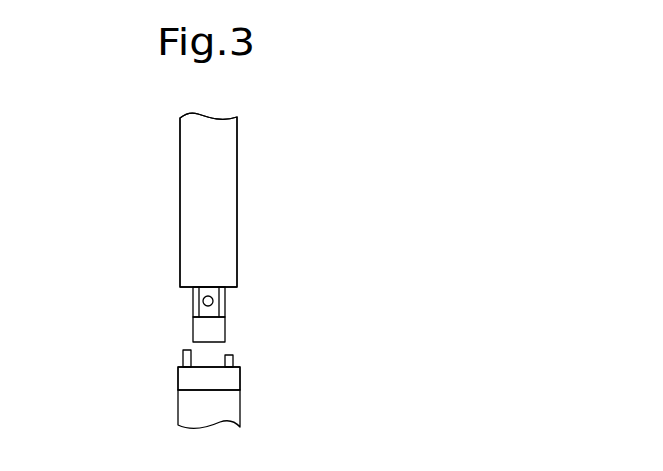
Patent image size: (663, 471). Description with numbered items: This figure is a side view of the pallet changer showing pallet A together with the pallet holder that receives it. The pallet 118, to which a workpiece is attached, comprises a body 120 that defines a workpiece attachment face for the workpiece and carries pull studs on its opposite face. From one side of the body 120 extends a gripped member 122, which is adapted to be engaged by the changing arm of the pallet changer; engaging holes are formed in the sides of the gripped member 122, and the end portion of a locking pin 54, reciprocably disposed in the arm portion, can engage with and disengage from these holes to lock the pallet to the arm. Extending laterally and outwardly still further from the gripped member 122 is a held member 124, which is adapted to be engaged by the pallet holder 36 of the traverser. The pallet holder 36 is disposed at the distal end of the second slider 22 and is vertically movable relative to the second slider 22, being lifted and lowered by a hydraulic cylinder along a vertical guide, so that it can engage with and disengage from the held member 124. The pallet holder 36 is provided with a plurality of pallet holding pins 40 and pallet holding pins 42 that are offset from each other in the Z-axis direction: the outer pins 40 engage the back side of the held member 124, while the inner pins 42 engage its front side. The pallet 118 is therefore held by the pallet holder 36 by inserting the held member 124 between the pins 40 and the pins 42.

The pallet 118 is at (302, 147).
The body 120 is at (190, 158).
The gripped member 122 is at (225, 300).
The held member 124 is at (214, 329).
The locking pin 54 is at (199, 301).
The pallet holding pins 42 is at (183, 357).
The pallet holding pins 40 is at (233, 360).
The pallet holder 36 is at (228, 383).
The second slider 22 is at (190, 408).